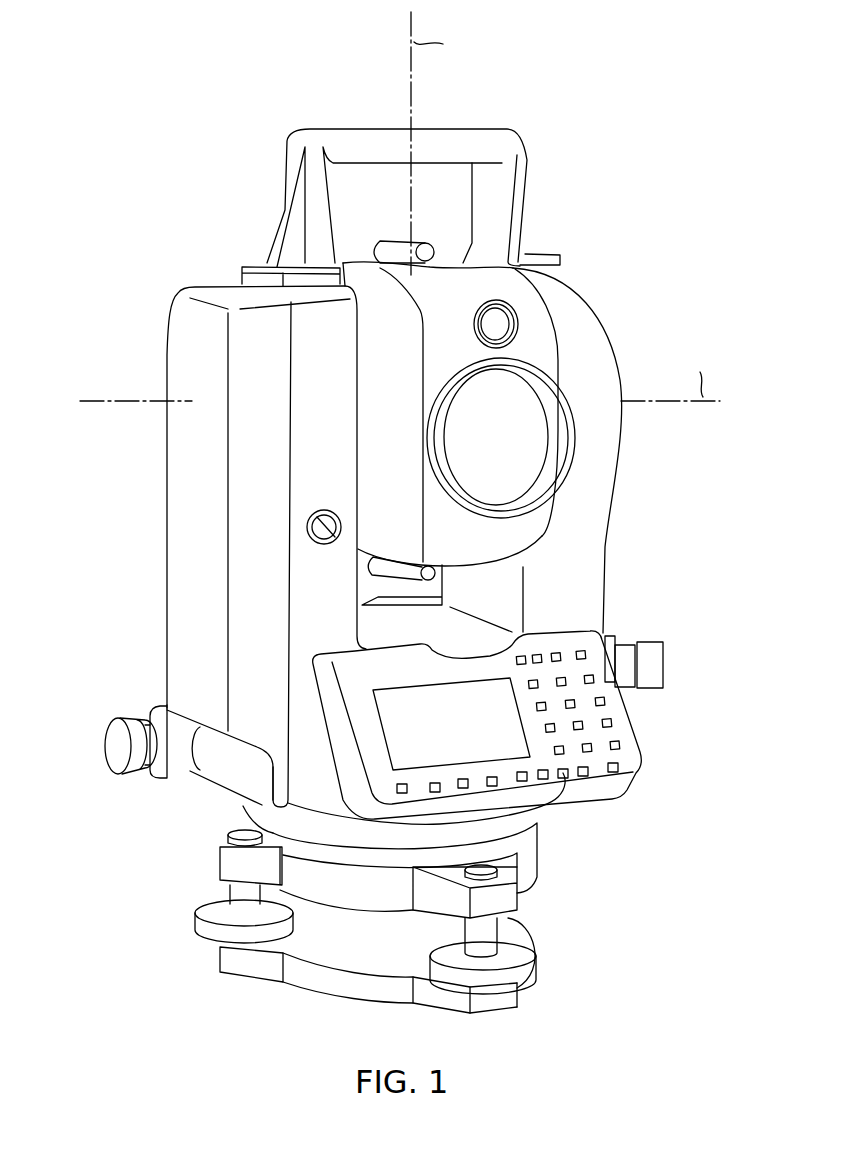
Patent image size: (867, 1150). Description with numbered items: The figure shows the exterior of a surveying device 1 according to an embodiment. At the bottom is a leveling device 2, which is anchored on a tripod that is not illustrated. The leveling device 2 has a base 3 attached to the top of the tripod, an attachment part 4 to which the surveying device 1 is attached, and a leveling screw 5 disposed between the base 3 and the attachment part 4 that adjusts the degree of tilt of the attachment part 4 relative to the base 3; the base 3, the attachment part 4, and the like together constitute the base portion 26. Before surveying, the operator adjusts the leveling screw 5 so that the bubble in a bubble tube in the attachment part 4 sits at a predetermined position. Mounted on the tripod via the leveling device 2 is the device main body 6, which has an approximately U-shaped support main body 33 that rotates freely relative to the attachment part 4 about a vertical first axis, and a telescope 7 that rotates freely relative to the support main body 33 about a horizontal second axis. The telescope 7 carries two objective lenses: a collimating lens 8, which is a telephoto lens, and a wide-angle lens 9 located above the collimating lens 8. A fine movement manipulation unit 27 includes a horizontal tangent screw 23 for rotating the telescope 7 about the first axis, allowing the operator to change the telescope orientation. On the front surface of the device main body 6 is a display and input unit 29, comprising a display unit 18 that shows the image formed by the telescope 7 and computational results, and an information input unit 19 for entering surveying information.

The surveying device 1 is at (580, 178).
The leveling device 2 is at (562, 899).
The base 3 is at (525, 937).
The attachment part 4 is at (532, 865).
The leveling screw 5 is at (455, 973).
The device main body 6 is at (321, 458).
The telescope 7 is at (538, 337).
The collimating lens 8 is at (520, 435).
The wide-angle lens 9 is at (500, 322).
The display unit 18 is at (403, 728).
The information input unit 19 is at (608, 732).
The horizontal tangent screw 23 is at (115, 752).
The base portion 26 is at (560, 988).
The fine movement manipulation unit 27 is at (113, 705).
The display and input unit 29 is at (640, 777).
The support main body 33 is at (228, 348).